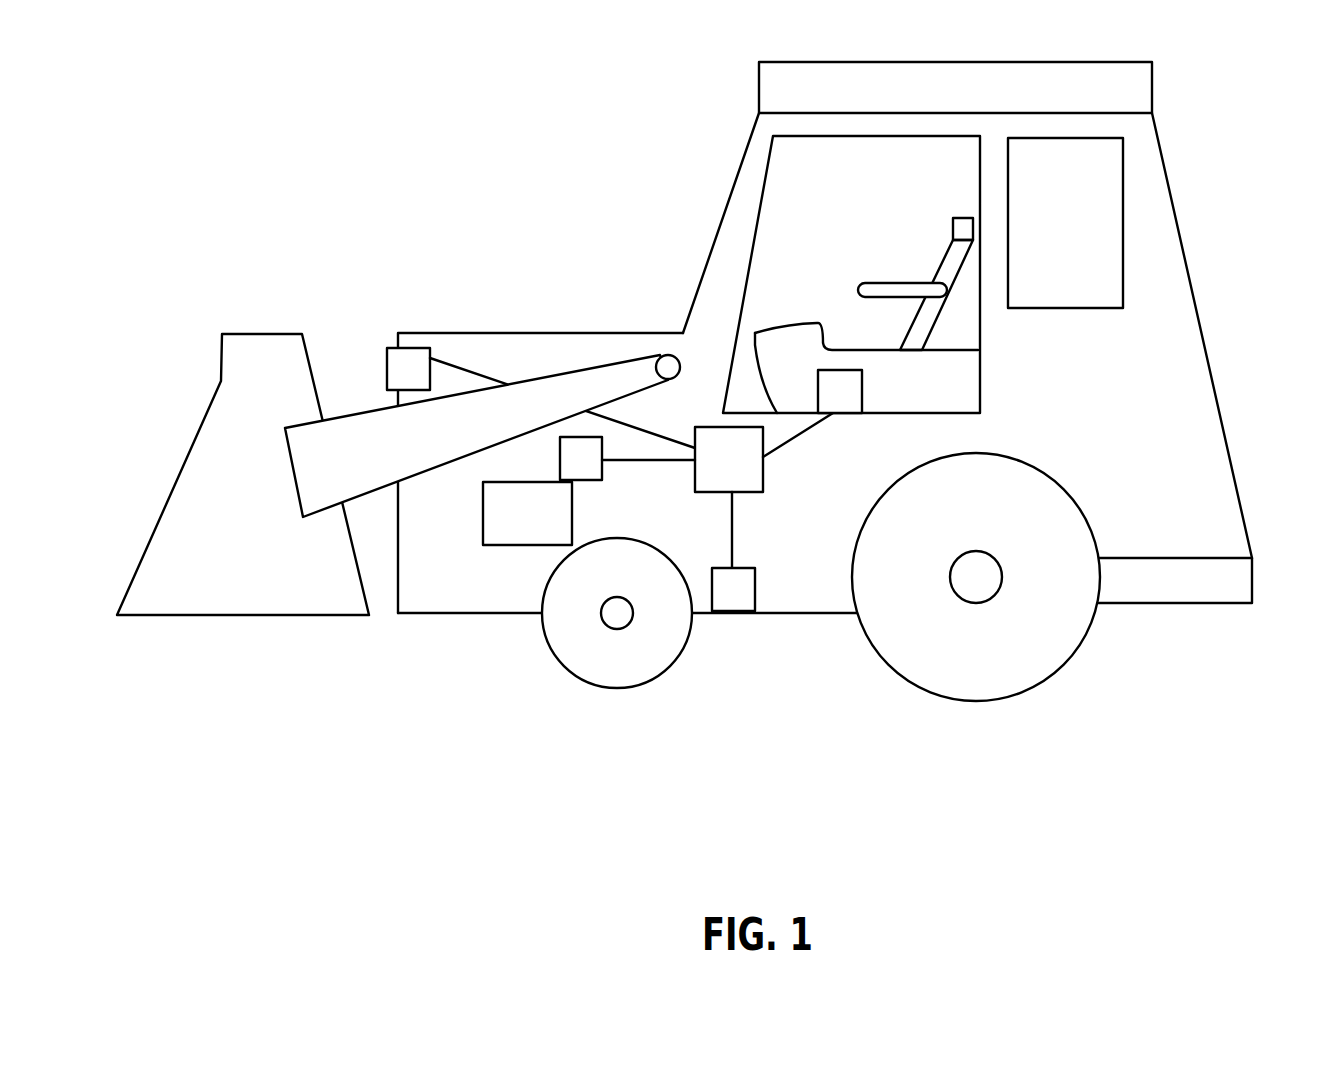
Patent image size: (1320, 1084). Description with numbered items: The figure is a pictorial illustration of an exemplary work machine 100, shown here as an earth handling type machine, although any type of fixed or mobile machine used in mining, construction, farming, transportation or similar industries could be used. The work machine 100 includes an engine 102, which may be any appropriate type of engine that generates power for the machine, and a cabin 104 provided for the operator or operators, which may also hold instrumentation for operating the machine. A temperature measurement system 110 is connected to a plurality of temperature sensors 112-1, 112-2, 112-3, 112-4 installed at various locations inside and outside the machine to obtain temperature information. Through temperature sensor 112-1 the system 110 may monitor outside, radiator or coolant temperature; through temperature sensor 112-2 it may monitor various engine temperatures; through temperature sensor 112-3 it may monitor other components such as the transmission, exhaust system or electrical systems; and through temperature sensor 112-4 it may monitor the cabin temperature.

The work machine 100 is at (697, 381).
The engine 102 is at (542, 537).
The cabin 104 is at (863, 181).
The temperature measurement system 110 is at (753, 471).
The temperature sensor 112-1 is at (430, 348).
The temperature sensor 112-2 is at (603, 468).
The temperature sensor 112-3 is at (748, 568).
The temperature sensor 112-4 is at (862, 396).